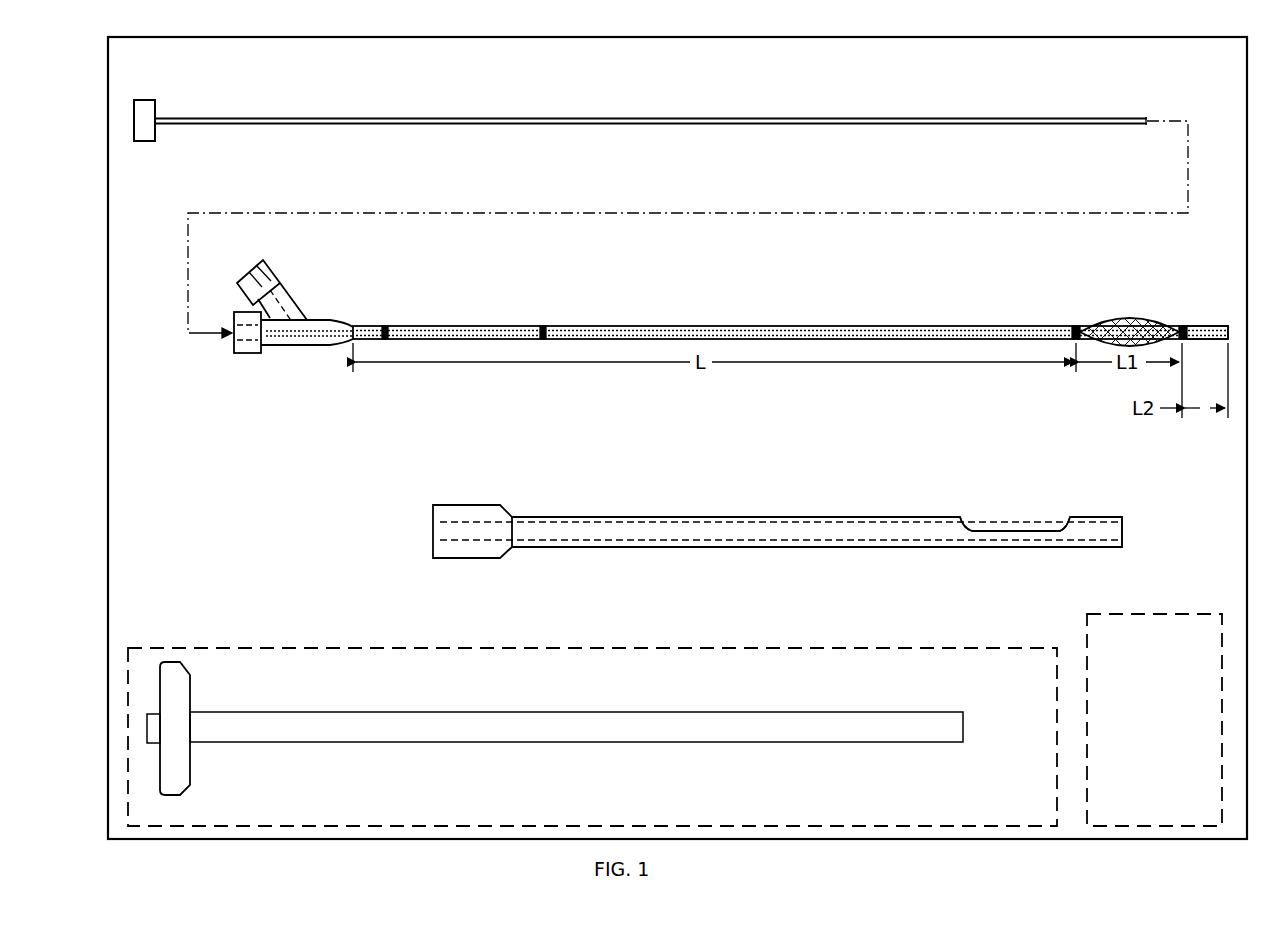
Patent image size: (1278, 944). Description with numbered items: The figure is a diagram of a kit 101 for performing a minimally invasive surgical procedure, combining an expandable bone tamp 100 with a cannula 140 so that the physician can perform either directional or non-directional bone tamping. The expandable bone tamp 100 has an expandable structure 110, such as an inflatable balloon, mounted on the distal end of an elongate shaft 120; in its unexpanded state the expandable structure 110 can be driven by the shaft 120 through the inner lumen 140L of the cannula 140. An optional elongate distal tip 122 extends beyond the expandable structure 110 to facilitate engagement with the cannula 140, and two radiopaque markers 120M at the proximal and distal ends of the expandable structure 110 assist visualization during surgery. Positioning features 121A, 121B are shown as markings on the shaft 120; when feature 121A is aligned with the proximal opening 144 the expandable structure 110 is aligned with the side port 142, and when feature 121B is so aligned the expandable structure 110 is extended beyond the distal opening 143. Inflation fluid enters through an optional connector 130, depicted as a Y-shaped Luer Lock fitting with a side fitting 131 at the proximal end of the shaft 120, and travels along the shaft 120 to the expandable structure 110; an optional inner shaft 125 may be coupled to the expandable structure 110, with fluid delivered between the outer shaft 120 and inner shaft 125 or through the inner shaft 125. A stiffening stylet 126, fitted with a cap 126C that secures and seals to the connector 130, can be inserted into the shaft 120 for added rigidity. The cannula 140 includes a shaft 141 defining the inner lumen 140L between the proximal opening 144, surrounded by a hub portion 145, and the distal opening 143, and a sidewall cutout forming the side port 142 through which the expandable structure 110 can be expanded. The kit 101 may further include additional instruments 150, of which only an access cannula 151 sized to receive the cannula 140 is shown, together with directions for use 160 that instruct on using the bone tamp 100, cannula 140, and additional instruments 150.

The expandable bone tamp 100 is at (340, 408).
The kit 101 is at (1186, 73).
The expandable structure 110 is at (1120, 318).
The elongate shaft 120 is at (678, 325).
The radiopaque markers 120M is at (1072, 325).
The positioning feature 121A is at (543, 340).
The positioning feature 121B is at (385, 340).
The elongate distal tip 122 is at (1218, 325).
The inner shaft 125 is at (787, 325).
The stiffening stylet 126 is at (638, 118).
The cap 126C is at (158, 100).
The connector 130 is at (312, 318).
The side port 131 is at (272, 275).
The cannula 140 is at (550, 573).
The inner lumen 140L is at (848, 517).
The shaft 141 is at (758, 517).
The side port 142 is at (1018, 522).
The distal opening 143 is at (1130, 530).
The proximal opening 144 is at (430, 528).
The hub body 145 is at (455, 505).
The additional instruments 150 is at (612, 812).
The access cannula 151 is at (348, 742).
The directions for use 160 is at (1174, 730).